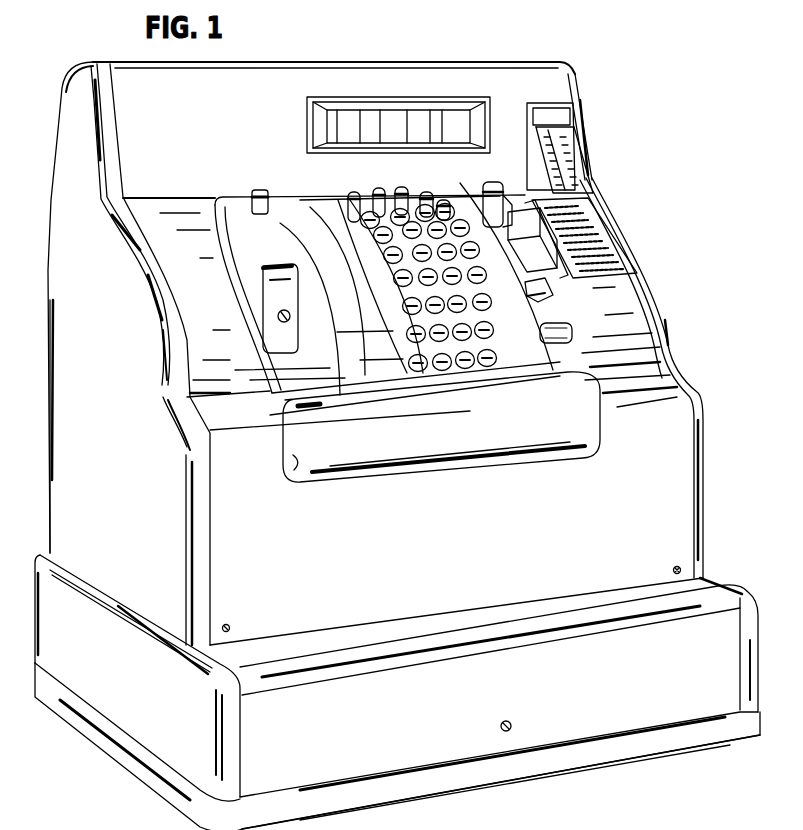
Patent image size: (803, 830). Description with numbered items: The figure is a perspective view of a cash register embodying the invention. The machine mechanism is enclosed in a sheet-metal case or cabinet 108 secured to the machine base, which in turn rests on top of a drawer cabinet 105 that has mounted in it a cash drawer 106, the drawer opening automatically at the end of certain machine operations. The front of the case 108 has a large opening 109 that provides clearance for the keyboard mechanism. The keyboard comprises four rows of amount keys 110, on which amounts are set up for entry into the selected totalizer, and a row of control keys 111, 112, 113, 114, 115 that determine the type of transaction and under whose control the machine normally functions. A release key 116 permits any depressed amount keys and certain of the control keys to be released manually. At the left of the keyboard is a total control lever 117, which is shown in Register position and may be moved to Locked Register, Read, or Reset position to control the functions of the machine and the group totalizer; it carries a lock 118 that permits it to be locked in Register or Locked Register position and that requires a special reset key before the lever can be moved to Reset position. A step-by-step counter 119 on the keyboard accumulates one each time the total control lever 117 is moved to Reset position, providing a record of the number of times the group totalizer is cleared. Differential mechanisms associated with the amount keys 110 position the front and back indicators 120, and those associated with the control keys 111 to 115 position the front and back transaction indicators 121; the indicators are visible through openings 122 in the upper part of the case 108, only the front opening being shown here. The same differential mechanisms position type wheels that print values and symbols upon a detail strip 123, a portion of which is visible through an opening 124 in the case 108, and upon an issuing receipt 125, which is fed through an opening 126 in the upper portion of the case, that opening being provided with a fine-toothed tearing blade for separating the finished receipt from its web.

The drawer cabinet 105 is at (153, 748).
The cash drawer 106 is at (460, 752).
The case or cabinet 108 is at (68, 492).
The opening 109 is at (292, 464).
The amount keys 110 is at (470, 362).
The control key 111 is at (484, 190).
The control key 112 is at (484, 200).
The control key 113 is at (525, 262).
The control key 114 is at (546, 297).
The control key 115 is at (541, 334).
The release key 116 is at (256, 197).
The total control lever 117 is at (273, 296).
The lock 118 is at (278, 317).
The step-by-step counter 119 is at (296, 406).
The front and back indicators 120 is at (392, 120).
The front and back transaction indicators 121 is at (457, 120).
The openings 122 is at (328, 121).
The detail strip 123 is at (590, 213).
The opening 124 is at (603, 233).
The issuing receipt 125 is at (556, 128).
The opening 126 is at (548, 120).